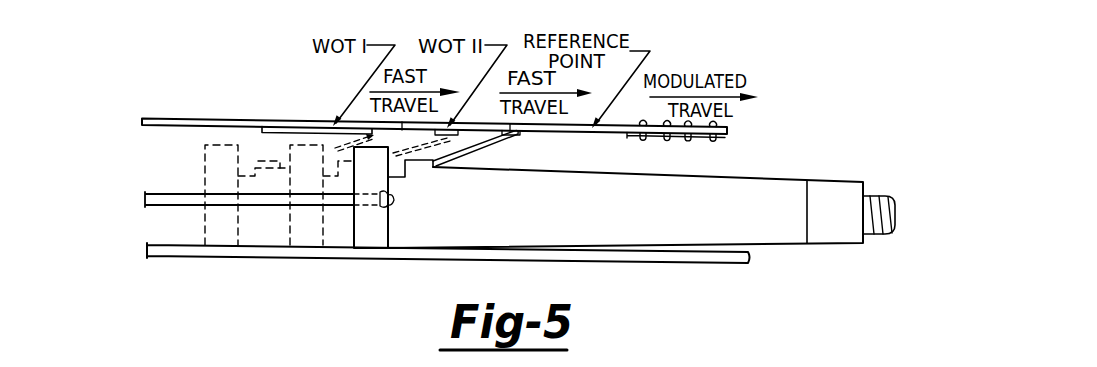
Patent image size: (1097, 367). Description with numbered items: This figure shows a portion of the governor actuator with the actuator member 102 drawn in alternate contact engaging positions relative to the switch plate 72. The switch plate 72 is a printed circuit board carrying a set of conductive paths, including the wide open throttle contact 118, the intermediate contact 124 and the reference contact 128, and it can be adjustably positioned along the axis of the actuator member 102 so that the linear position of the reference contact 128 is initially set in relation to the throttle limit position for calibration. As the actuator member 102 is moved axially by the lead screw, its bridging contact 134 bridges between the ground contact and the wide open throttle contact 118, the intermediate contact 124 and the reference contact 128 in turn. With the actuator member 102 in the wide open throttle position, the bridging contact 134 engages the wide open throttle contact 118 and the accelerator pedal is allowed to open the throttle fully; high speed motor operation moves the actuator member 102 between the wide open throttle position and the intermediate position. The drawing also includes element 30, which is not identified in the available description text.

The control rod 30 is at (158, 196).
The switch plate 72 is at (628, 136).
The actuator member 102 is at (733, 177).
The wot-1 contact 118 is at (272, 135).
The wot-2 contact 124 is at (453, 138).
The reference contact 128 is at (607, 137).
The bridging contact 134 is at (507, 140).